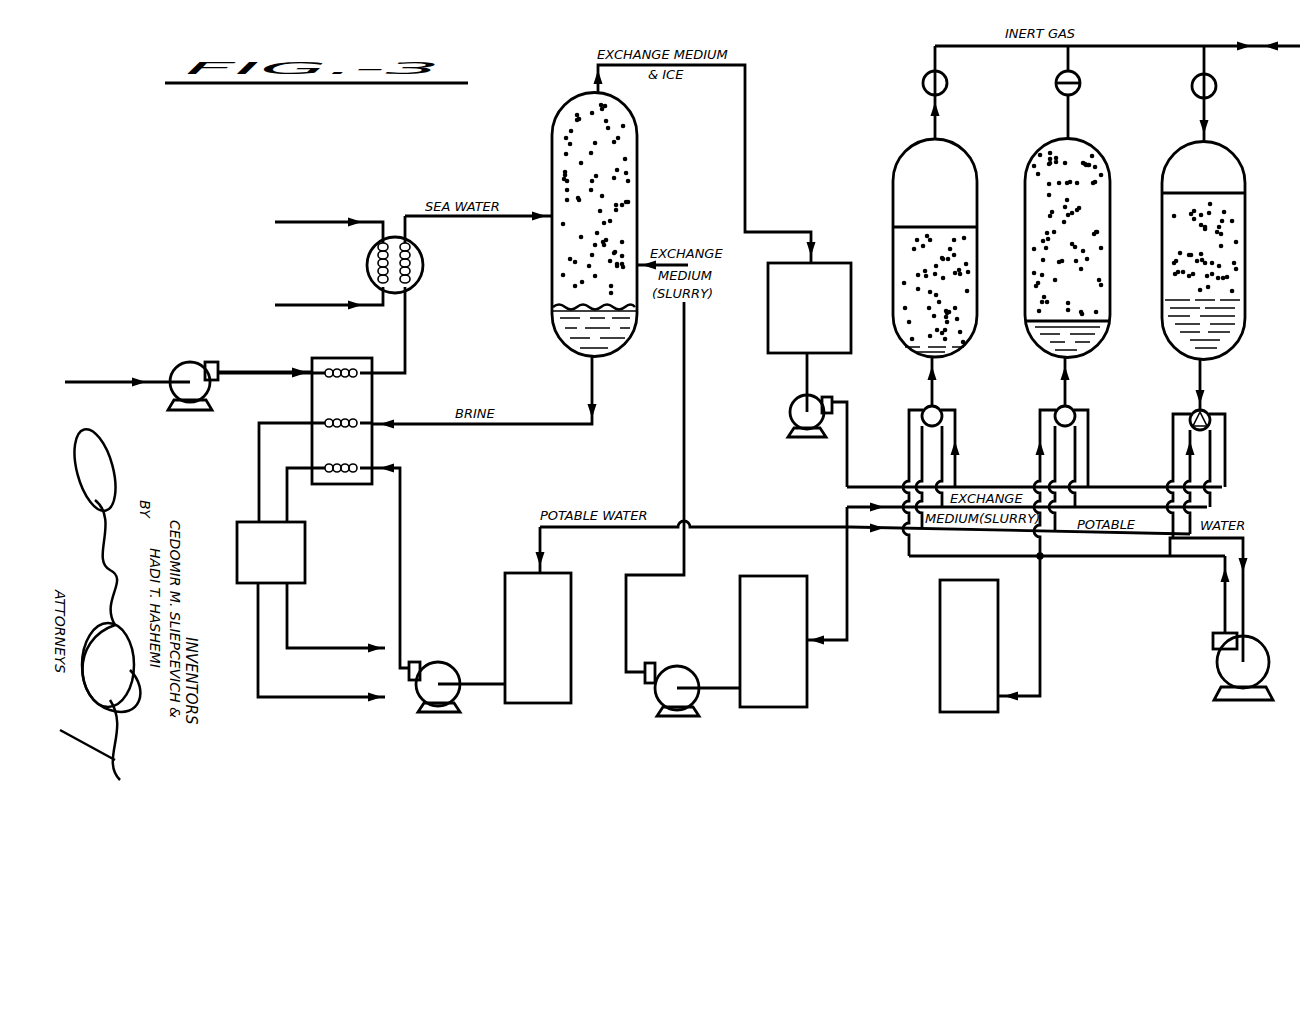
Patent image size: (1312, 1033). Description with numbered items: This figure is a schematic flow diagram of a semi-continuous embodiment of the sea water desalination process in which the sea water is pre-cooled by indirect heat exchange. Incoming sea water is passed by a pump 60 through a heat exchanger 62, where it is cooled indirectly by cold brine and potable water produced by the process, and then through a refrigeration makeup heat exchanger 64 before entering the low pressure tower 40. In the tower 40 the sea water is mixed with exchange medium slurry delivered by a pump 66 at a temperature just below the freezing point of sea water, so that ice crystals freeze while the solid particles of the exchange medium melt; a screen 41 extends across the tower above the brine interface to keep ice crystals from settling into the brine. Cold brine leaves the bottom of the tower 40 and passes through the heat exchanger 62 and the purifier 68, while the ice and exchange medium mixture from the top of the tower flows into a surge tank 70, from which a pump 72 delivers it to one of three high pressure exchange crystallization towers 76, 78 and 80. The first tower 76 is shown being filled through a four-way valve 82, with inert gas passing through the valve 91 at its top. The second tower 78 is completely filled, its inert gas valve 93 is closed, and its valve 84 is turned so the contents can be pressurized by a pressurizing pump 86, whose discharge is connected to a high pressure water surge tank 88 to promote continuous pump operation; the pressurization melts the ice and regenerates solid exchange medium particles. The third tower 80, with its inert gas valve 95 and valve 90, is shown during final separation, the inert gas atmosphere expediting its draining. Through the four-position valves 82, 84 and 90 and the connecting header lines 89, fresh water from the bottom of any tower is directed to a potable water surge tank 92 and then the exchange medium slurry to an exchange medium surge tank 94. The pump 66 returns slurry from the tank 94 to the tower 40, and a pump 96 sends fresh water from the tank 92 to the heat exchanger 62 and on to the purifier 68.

The exchange crystallization and separation tower 40 is at (606, 218).
The screen 41 is at (551, 301).
The pump 60 is at (190, 368).
The heat exchanger 62 is at (340, 363).
The refrigeration makeup heat exchanger 64 is at (367, 268).
The pump 66 is at (677, 676).
The purifier 68 is at (276, 561).
The surge tank 70 is at (818, 320).
The pump 72 is at (812, 400).
The high pressure exchange crystallization tower 76 is at (942, 276).
The high pressure exchange crystallization tower 78 is at (1076, 247).
The high pressure exchange crystallization tower 80 is at (1210, 254).
The four-way valve 82 is at (942, 412).
The valve 84 is at (1074, 414).
The pressurizing pump 86 is at (1220, 681).
The high pressure water surge tank 88 is at (975, 646).
The header line 89 is at (1074, 558).
The valve 90 is at (1207, 417).
The inert gas valve 91 is at (947, 92).
The potable water surge tank 92 is at (545, 640).
The valve 93 is at (1080, 92).
The exchange medium surge tank 94 is at (778, 644).
The inert gas valve 95 is at (1216, 93).
The pump 96 is at (439, 674).